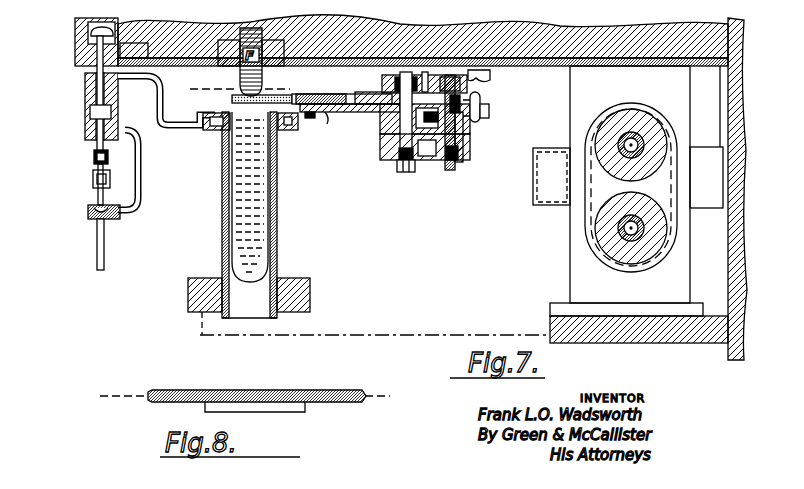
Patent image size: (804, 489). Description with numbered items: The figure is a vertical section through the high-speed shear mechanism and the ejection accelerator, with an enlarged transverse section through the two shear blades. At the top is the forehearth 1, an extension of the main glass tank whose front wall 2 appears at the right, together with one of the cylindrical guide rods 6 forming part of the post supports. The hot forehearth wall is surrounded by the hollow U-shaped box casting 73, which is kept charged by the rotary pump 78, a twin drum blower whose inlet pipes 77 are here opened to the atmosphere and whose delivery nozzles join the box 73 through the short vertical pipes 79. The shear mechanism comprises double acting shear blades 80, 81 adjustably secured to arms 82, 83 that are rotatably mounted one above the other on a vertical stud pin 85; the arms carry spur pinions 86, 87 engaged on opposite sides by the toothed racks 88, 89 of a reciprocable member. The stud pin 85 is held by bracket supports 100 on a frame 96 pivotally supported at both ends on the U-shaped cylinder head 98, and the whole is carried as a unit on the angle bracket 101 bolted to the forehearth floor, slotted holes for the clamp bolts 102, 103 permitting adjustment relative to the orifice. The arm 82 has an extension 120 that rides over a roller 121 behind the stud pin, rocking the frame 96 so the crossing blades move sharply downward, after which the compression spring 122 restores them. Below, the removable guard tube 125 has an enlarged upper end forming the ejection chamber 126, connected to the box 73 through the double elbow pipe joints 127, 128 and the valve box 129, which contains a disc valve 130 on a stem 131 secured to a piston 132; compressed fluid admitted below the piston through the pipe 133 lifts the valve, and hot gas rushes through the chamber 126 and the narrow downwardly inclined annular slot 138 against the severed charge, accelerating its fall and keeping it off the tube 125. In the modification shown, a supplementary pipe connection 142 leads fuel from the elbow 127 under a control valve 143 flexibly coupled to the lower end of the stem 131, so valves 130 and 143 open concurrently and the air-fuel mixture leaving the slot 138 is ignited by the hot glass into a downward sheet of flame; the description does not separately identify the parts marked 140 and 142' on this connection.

In FIG. 7, the forehearth 1 is at (206, 44).
In FIG. 7, the front wall of main tank 2 is at (728, 30).
In FIG. 7, the cylindrical guide rods 6 is at (642, 62).
In FIG. 7, the U-shaped box casting 73 is at (78, 52).
In FIG. 7, the heavy pipes 77 is at (696, 88).
In FIG. 7, the rotary pump 78 is at (664, 193).
In FIG. 7, the short vertical pipes 79 is at (562, 82).
In FIG. 7, the shear blade 80 is at (270, 99).
In FIG. 8, the shear blade 80 is at (317, 392).
In FIG. 7, the shear blade 81 is at (234, 97).
In FIG. 8, the shear blade 81 is at (174, 403).
In FIG. 7, the shear arm 82 is at (338, 96).
In FIG. 7, the shear arm 83 is at (320, 114).
In FIG. 7, the vertical stud pin 85 is at (400, 168).
In FIG. 7, the spur pinion 86 is at (390, 80).
In FIG. 7, the spur pinion 87 is at (395, 132).
In FIG. 7, the toothed rack 88 is at (444, 77).
In FIG. 7, the toothed rack 89 is at (380, 126).
In FIG. 7, the frame 96 is at (468, 88).
In FIG. 7, the U-shaped cylinder head 98 is at (466, 170).
In FIG. 7, the bracket supports 100 is at (424, 73).
In FIG. 7, the angle bracket 101 is at (490, 168).
In FIG. 7, the clamp bolt 102 is at (480, 82).
In FIG. 7, the clamp bolt 103 is at (462, 150).
In FIG. 7, the extension 120 is at (482, 98).
In FIG. 7, the roller 121 is at (490, 116).
In FIG. 7, the compression spring 122 is at (450, 160).
In FIG. 7, the removable guard tube 125 is at (222, 213).
In FIG. 7, the ejection chamber 126 is at (288, 132).
In FIG. 7, the elbow pipe joint 127 is at (194, 136).
In FIG. 7, the elbow pipe joint 128 is at (172, 44).
In FIG. 7, the valve box 129 is at (86, 88).
In FIG. 7, the disc valve 130 is at (92, 32).
In FIG. 7, the valve stem 131 is at (94, 108).
In FIG. 7, the piston 132 is at (90, 118).
In FIG. 7, the pipe 133 is at (110, 124).
In FIG. 7, the annular slot 138 is at (232, 150).
In FIG. 7, the coupling 140 is at (94, 155).
In FIG. 7, the supplementary pipe connection 142 is at (146, 170).
In FIG. 7, the pipe 142' is at (123, 244).
In FIG. 7, the control valve 143 is at (90, 216).